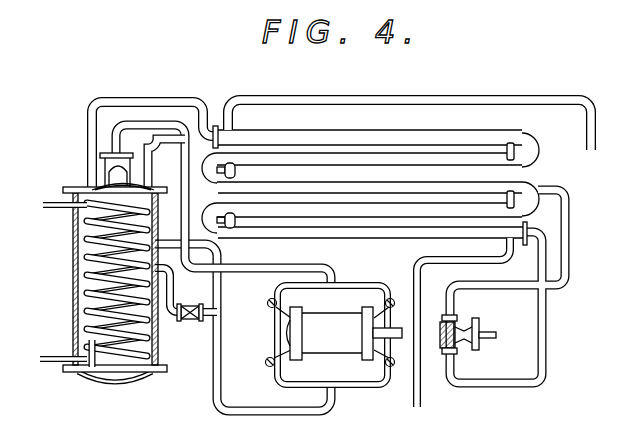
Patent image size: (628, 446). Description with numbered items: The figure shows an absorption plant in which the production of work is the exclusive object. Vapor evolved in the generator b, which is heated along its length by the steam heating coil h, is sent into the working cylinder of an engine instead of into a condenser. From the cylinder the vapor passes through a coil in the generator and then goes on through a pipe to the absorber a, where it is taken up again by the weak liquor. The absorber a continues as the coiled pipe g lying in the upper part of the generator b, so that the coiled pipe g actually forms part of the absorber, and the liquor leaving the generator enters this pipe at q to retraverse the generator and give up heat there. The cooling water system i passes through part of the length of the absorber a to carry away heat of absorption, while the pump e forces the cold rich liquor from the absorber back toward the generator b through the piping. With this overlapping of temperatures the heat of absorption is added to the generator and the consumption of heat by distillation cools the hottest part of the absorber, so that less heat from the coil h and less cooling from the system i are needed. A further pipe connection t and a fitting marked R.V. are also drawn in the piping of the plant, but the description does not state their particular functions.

The generator b is at (153, 188).
The steam heating coil h is at (47, 205).
The coiled pipe g is at (78, 271).
The inlet of coiled pipe q is at (77, 375).
The absorber a is at (323, 236).
The cooling water system i is at (487, 98).
The pipe loop t is at (505, 286).
The pump e is at (485, 303).
The reducing valve R.V. is at (186, 294).